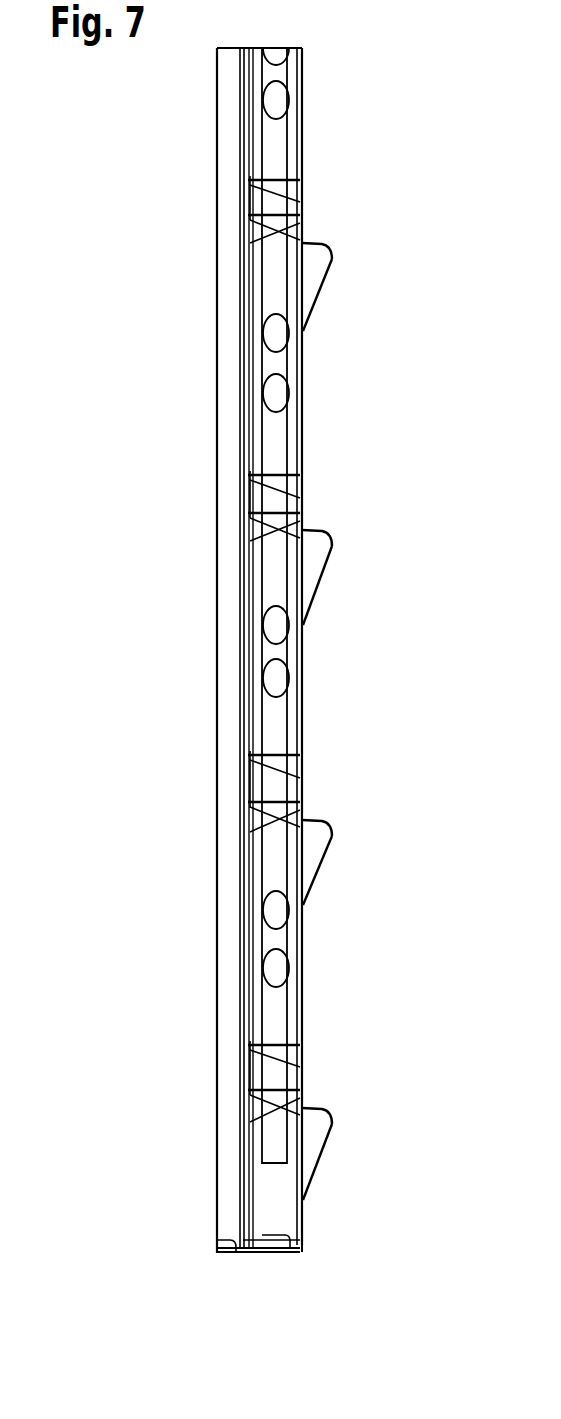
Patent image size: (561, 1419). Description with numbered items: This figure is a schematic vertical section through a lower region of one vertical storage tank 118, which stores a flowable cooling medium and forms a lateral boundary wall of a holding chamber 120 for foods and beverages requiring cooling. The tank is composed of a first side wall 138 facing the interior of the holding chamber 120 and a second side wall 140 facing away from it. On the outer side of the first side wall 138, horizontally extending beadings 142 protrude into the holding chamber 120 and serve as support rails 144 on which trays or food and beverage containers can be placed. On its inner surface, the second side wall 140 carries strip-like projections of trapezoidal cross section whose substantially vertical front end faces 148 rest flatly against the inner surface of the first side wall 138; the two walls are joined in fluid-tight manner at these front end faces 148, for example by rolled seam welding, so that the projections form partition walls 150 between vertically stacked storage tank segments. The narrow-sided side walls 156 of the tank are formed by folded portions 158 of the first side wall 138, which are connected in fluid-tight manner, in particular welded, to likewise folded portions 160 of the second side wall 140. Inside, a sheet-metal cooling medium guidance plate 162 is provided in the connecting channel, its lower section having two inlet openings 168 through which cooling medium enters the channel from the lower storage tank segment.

The vertical storage tank 118 is at (198, 483).
The holding chamber 120 is at (397, 663).
The first side wall 138 is at (303, 418).
The second side wall 140 is at (245, 426).
The beading 142 is at (326, 290).
The support rail 144 is at (333, 258).
The front end face 148 is at (300, 218).
The partition wall 150 is at (300, 173).
The narrow-sided side wall 156 is at (282, 1251).
The folded portion of the first side wall 158 is at (255, 1251).
The folded portion of the second side wall 160 is at (222, 1244).
The cooling medium guidance plate 162 is at (275, 583).
The inlet opening 168 is at (270, 680).